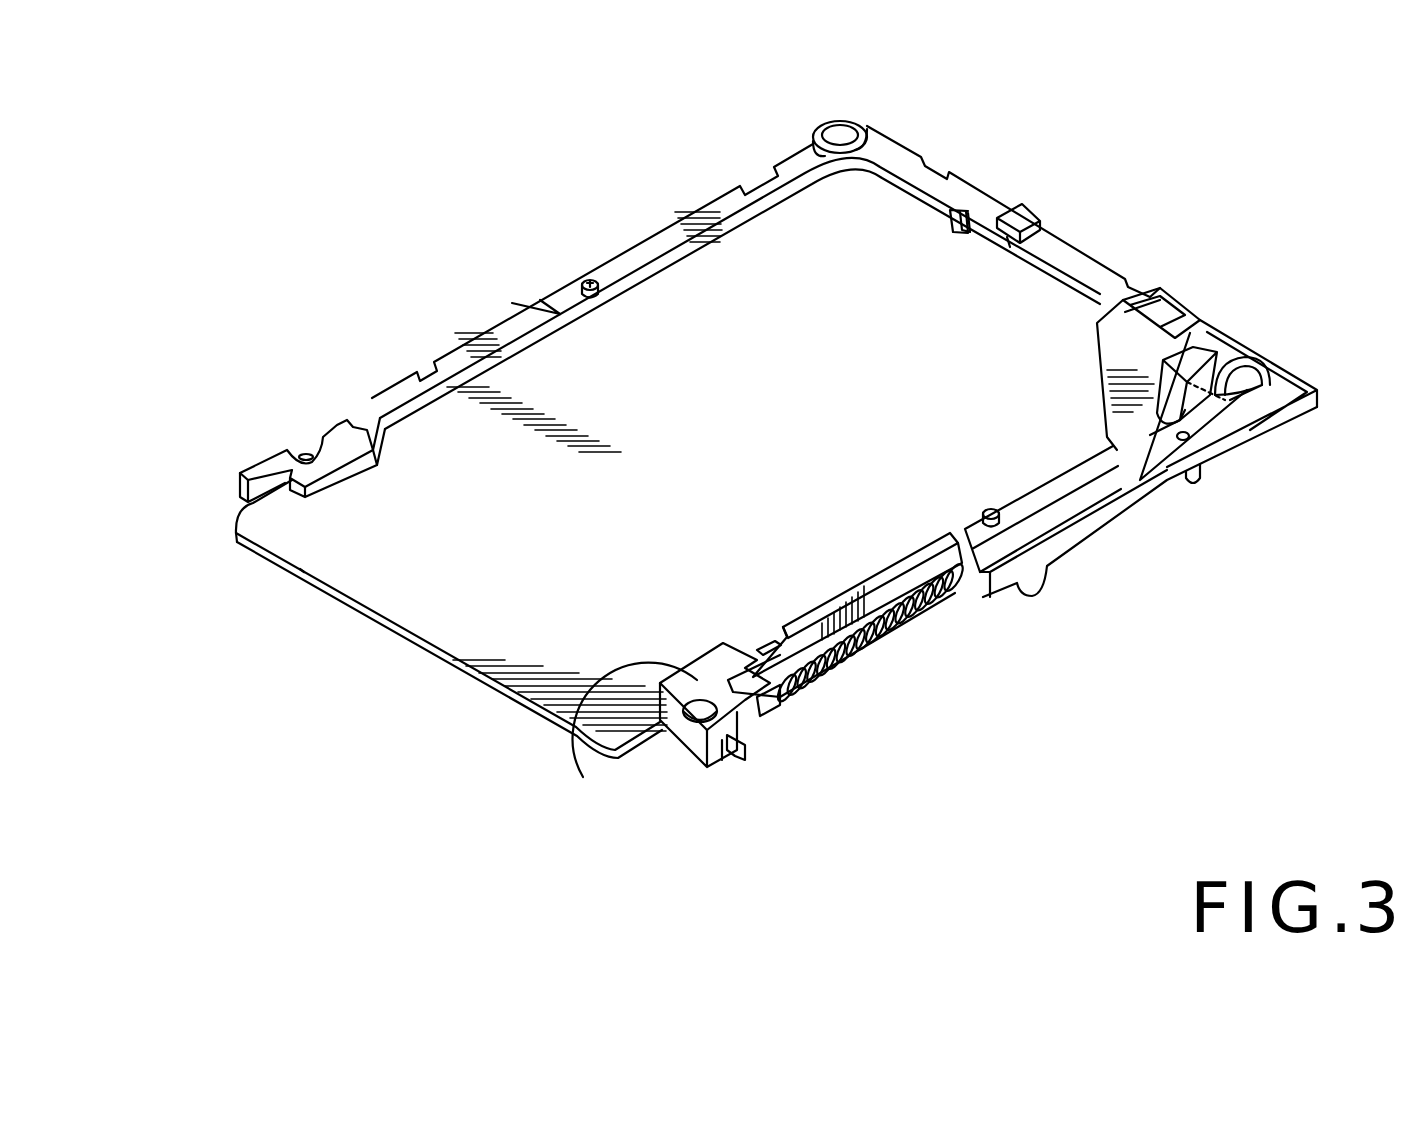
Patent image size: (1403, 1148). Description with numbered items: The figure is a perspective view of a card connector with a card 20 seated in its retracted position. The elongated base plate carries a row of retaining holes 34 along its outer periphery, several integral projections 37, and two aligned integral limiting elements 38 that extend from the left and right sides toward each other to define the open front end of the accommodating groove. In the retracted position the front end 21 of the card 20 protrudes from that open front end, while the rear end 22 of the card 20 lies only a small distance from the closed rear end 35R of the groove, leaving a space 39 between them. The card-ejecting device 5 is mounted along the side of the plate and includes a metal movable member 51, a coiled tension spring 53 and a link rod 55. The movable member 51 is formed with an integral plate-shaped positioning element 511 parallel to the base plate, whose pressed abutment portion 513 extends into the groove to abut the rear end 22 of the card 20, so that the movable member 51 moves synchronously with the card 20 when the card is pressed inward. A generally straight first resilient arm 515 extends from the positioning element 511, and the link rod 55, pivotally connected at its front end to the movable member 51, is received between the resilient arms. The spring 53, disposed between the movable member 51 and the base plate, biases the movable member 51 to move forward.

The card-ejecting device 5 is at (1045, 514).
The card 20 is at (337, 553).
The front end 21 is at (413, 637).
The rear end 22 is at (863, 175).
The retaining holes 34 is at (1187, 480).
The closed rear end 35R is at (910, 190).
The integral projections 37 is at (587, 280).
The limiting elements 38 is at (345, 447).
The space 39 is at (885, 182).
The movable member 51 is at (1077, 507).
The coiled tension spring 53 is at (813, 687).
The link rod 55 is at (1243, 403).
The positioning element 511 is at (1127, 388).
The pressed abutment portion 513 is at (1157, 333).
The first resilient arm 515 is at (1207, 427).